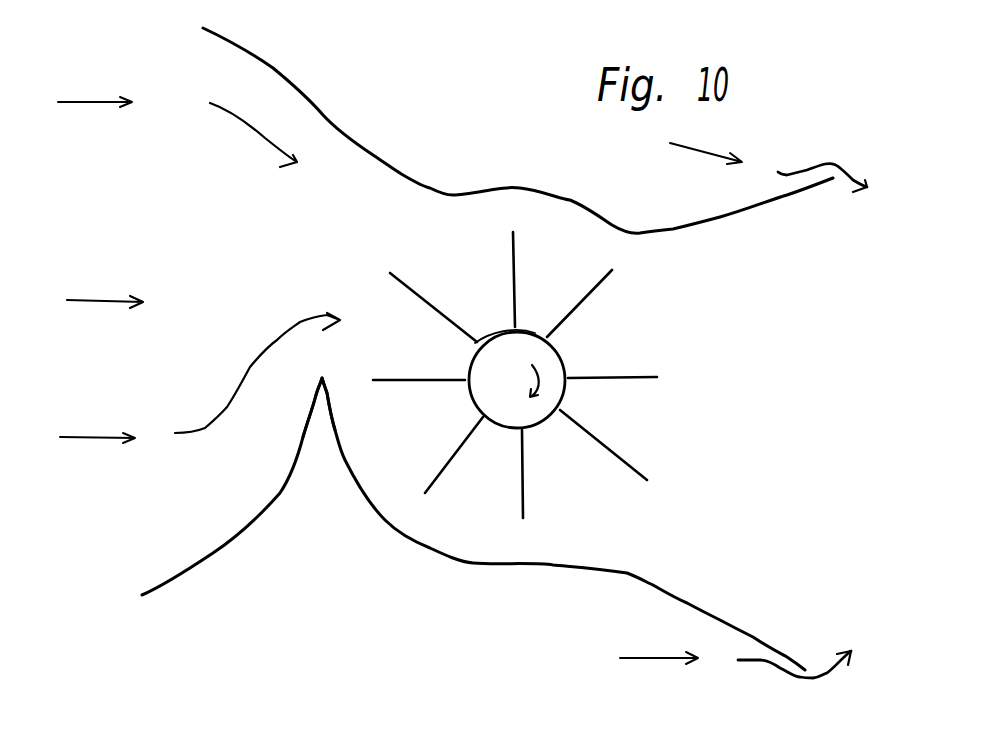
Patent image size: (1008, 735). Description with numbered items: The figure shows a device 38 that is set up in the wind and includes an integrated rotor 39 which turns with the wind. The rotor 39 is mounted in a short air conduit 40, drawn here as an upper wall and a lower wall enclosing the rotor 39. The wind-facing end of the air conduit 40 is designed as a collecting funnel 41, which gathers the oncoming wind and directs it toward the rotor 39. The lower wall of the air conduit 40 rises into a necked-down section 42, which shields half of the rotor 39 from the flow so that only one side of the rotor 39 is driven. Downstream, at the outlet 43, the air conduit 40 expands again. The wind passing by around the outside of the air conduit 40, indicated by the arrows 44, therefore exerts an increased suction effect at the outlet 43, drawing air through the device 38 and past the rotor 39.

The device 38 is at (346, 567).
The rotor 39 is at (553, 360).
The air conduit 40 is at (458, 216).
The collecting funnel 41 is at (220, 259).
The necked-down section 42 is at (316, 413).
The outlet 43 is at (832, 438).
The arrows 44 is at (807, 165).